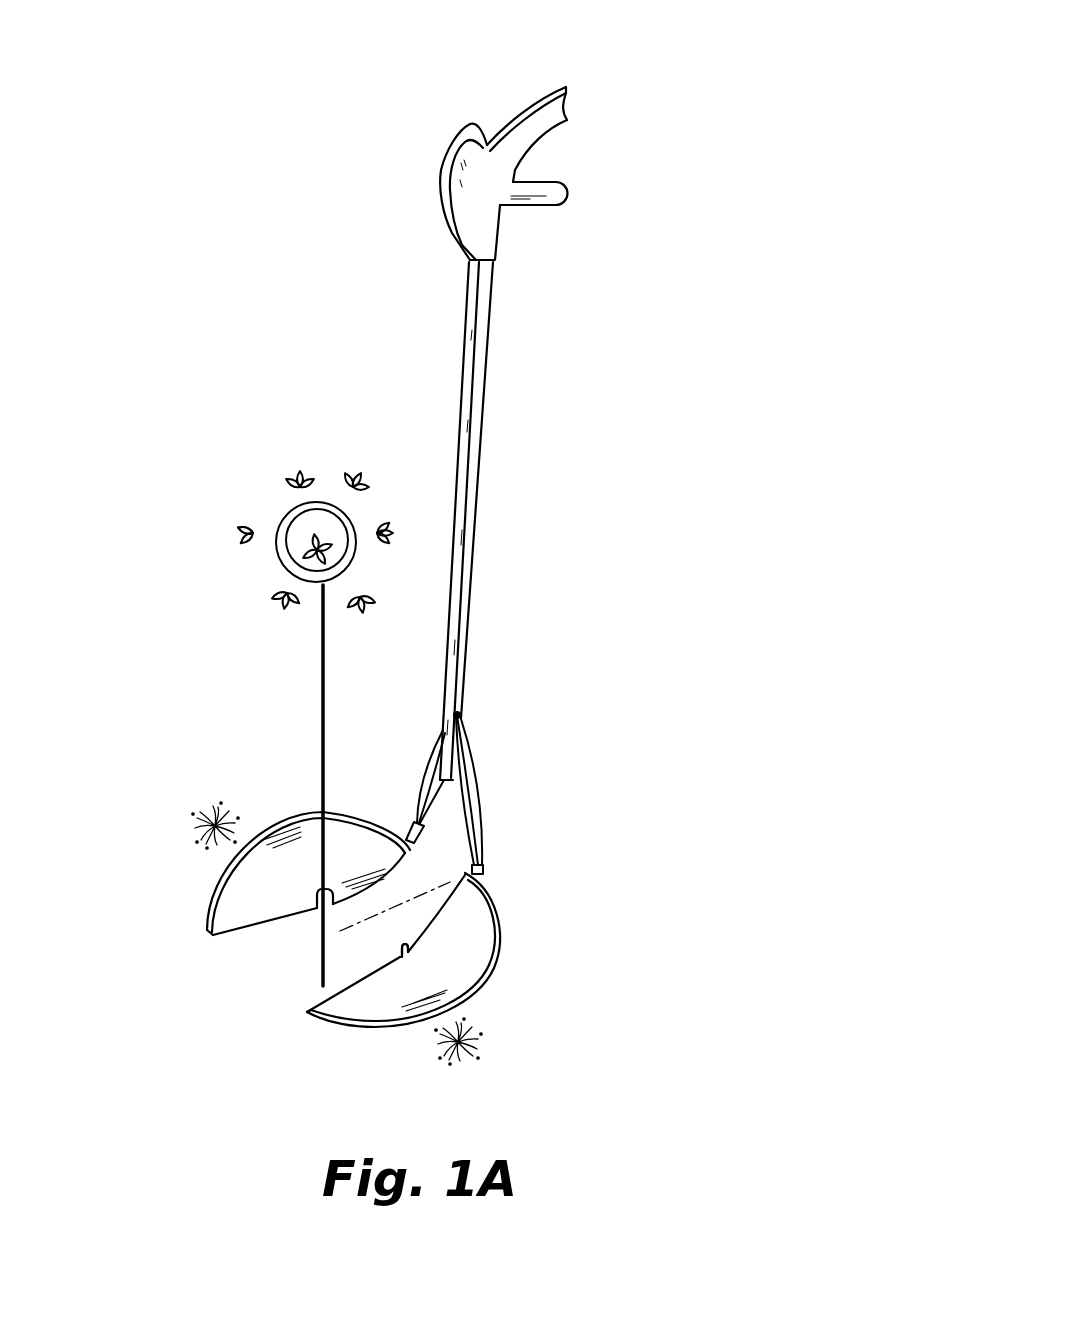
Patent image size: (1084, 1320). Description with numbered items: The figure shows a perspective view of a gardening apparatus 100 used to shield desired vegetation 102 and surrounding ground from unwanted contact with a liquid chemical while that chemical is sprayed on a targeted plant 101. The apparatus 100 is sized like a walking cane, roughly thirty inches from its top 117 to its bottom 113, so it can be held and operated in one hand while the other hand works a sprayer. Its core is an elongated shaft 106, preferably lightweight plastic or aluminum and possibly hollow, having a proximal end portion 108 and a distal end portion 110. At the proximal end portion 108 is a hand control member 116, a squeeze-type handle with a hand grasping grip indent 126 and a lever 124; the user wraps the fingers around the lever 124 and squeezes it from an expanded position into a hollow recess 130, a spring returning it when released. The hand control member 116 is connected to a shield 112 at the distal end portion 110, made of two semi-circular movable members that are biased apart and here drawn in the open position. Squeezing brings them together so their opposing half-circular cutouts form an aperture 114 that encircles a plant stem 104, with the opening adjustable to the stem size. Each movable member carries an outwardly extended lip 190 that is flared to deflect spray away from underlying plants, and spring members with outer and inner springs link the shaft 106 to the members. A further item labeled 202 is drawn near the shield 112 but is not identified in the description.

The gardening apparatus 100 is at (320, 131).
The targeted plant 101 is at (276, 460).
The desired vegetation 102 is at (198, 818).
The plant stem 104 is at (320, 684).
The elongated shaft 106 is at (481, 427).
The proximal end portion 108 is at (728, 32).
The distal end portion 110 is at (653, 682).
The shield 112 is at (278, 997).
The bottom 113 is at (342, 1026).
The aperture 114 is at (386, 951).
The hand control member 116 is at (570, 269).
The top 117 is at (545, 92).
The lever 124 is at (528, 207).
The hand grasping grip indent 126 is at (488, 127).
The hollow recess 130 is at (538, 133).
The outwardly extended lip 190 is at (353, 1023).
The pivot axis 202 is at (392, 908).